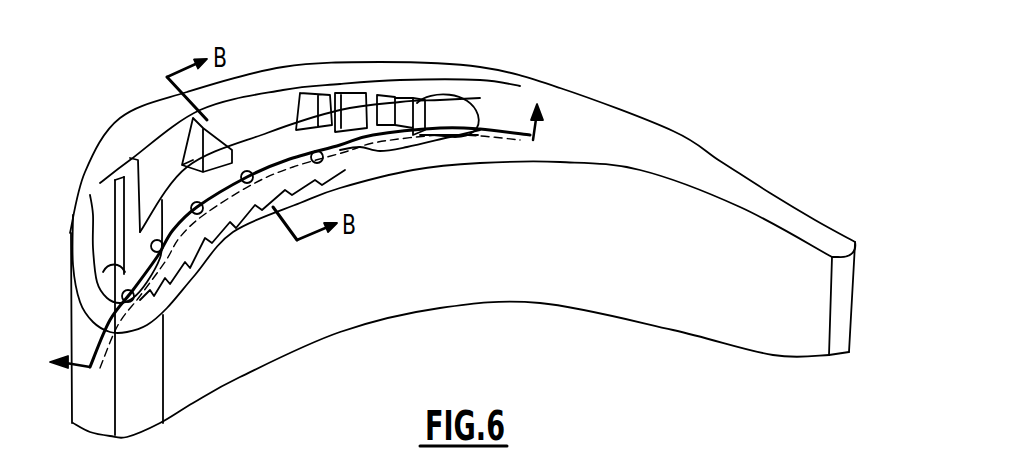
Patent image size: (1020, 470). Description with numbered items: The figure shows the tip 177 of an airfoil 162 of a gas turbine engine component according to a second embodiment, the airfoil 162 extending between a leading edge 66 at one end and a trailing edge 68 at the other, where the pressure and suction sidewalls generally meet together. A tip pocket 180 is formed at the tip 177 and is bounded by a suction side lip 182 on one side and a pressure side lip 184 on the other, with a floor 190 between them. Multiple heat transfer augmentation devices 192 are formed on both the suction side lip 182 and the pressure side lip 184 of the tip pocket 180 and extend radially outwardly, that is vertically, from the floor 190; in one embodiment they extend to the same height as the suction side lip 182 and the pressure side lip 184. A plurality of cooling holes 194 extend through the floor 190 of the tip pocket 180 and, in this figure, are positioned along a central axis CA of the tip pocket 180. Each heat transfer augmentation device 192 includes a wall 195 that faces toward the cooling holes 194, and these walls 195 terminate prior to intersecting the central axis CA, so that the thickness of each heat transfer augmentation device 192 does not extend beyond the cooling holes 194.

The leading edge 66 is at (97, 403).
The trailing edge 68 is at (847, 270).
The airfoil 162 is at (807, 313).
The tip 177 is at (678, 122).
The tip pocket 180 is at (150, 133).
The suction side lip 182 is at (380, 100).
The pressure side lip 184 is at (402, 142).
The floor 190 is at (180, 215).
The heat transfer augmentation devices 192 is at (285, 150).
The cooling holes 194 is at (252, 192).
The wall 195 is at (160, 190).
The central axis CA is at (138, 297).